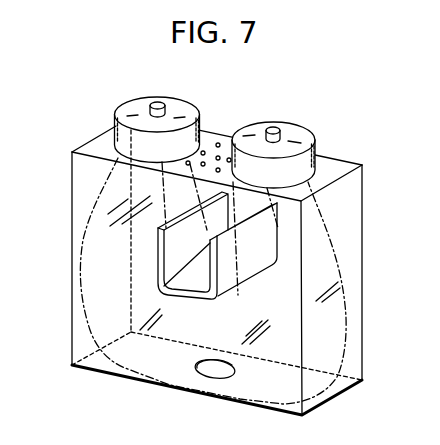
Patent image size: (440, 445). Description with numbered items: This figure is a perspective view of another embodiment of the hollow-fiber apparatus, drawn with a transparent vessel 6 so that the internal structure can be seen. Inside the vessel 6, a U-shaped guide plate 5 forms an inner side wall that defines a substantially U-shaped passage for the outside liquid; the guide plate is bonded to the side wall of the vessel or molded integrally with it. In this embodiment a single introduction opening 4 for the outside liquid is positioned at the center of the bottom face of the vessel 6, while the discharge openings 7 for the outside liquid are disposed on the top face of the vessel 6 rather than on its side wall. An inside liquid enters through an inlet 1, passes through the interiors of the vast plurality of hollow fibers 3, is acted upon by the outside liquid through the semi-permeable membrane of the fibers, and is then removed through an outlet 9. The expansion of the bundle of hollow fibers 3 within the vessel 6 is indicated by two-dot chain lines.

The inlet 1 is at (167, 107).
The hollow fibers 3 is at (346, 302).
The introduction opening 4 is at (203, 372).
The U-shaped guide plate 5 is at (160, 263).
The vessel 6 is at (362, 201).
The discharge openings 7 is at (218, 143).
The outlet 9 is at (283, 132).